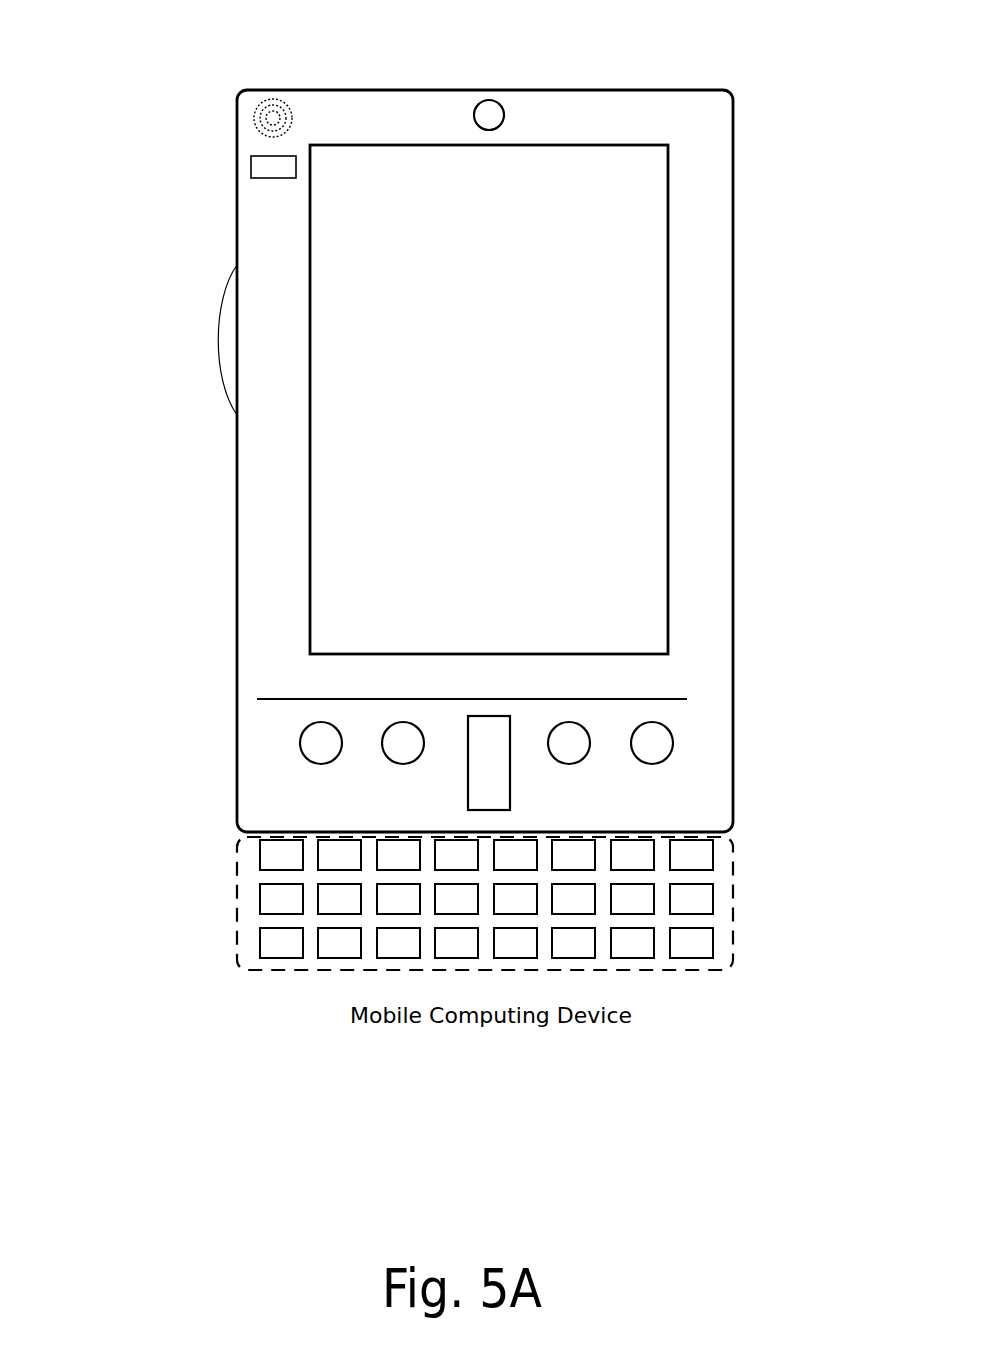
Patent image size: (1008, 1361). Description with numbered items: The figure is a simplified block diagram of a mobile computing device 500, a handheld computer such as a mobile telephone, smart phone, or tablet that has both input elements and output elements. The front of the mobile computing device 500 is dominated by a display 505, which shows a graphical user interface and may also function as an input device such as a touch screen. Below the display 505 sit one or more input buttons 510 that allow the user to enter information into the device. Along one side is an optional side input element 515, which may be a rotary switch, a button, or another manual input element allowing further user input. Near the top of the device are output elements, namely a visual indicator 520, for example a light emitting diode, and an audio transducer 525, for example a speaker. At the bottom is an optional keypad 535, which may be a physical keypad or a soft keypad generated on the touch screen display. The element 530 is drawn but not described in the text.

The mobile computing device 500 is at (722, 108).
The display 505 is at (322, 562).
The input buttons 510 is at (488, 768).
The side input element 515 is at (227, 340).
The visual indicator 520 is at (253, 172).
The audio transducer 525 is at (255, 120).
The camera 530 is at (503, 113).
The keypad 535 is at (247, 947).